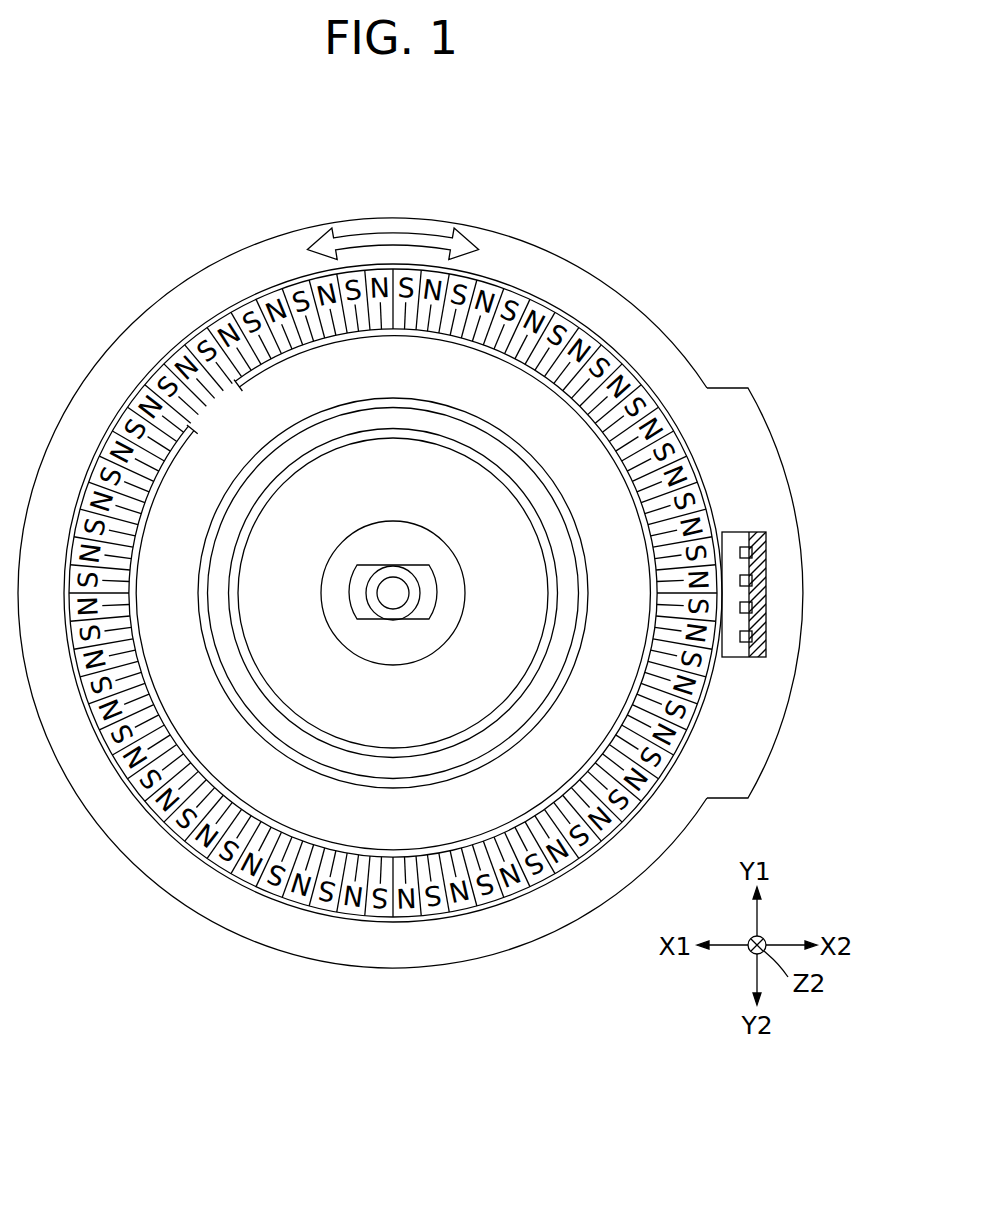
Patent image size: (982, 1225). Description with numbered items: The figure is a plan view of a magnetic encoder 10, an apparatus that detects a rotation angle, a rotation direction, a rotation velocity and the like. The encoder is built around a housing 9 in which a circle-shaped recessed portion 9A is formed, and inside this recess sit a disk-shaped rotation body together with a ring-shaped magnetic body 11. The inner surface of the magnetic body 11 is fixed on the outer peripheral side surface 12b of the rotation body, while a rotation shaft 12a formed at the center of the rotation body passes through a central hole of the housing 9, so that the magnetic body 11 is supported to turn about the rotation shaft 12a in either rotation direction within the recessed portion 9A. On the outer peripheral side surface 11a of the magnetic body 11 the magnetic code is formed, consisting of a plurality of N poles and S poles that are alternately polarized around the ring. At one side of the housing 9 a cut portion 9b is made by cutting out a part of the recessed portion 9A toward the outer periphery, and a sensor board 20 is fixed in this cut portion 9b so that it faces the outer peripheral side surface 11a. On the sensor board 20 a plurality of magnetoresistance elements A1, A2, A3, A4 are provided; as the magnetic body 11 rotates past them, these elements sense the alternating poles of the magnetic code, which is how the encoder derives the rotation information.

The magnetic encoder 10 is at (124, 254).
The housing 9 is at (640, 330).
The recessed portion 9A is at (708, 690).
The cut portion 9b is at (733, 532).
The magnetic body 11 is at (521, 299).
The outer peripheral side surface 11a is at (426, 918).
The rotation shaft 12a is at (435, 536).
The outer peripheral side surface 12b is at (341, 858).
The sensor board 20 is at (766, 533).
The magnetoresistance element A1 is at (753, 628).
The magnetoresistance element A2 is at (753, 600).
The magnetoresistance element A3 is at (753, 575).
The magnetoresistance element A4 is at (753, 543).